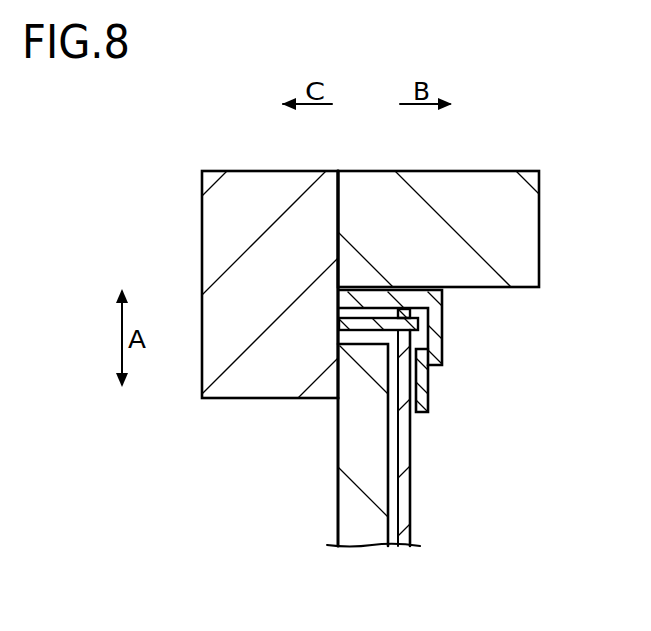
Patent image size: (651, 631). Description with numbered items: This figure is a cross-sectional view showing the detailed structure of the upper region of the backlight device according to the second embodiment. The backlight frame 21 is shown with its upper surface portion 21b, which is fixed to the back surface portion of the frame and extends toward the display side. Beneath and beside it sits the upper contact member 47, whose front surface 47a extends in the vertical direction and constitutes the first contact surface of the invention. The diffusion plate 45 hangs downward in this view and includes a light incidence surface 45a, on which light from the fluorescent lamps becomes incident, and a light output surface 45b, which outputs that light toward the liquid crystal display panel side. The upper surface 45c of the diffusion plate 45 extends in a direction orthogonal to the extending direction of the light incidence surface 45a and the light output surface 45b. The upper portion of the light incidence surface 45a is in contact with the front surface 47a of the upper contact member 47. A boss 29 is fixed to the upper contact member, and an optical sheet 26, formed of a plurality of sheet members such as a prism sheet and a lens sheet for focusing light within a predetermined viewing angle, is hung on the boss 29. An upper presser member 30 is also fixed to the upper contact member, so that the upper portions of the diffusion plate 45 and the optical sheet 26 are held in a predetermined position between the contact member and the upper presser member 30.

The upper contact member 47 is at (262, 184).
The front surface of the upper contact member 47a is at (340, 210).
The upper surface portion 21b is at (438, 207).
The backlight frame 21 is at (451, 184).
The boss 29 is at (415, 326).
The upper presser member 30 is at (420, 381).
The diffusion plate 45 is at (365, 453).
The light incidence surface 45a is at (337, 460).
The light output surface 45b is at (393, 482).
The upper surface 45c is at (355, 336).
The optical sheet 26 is at (402, 527).